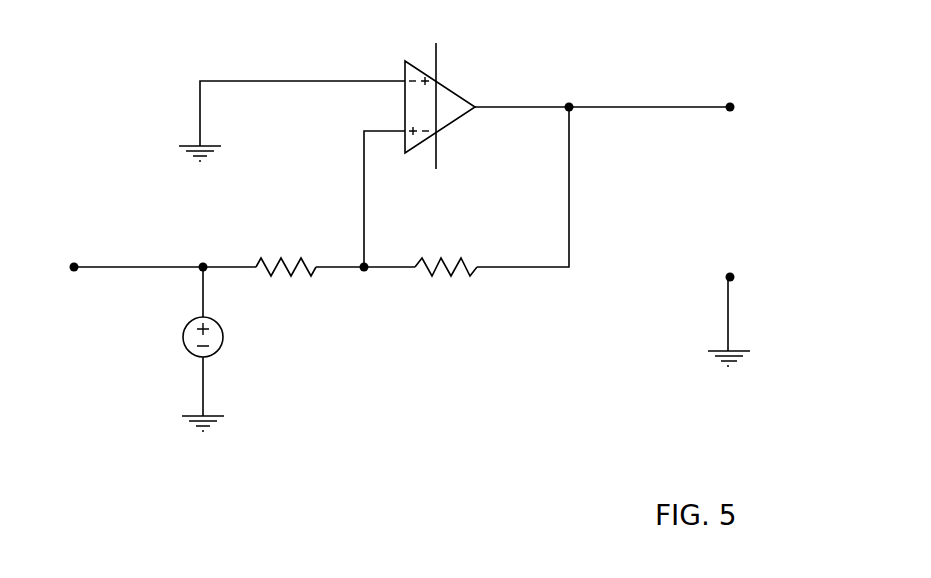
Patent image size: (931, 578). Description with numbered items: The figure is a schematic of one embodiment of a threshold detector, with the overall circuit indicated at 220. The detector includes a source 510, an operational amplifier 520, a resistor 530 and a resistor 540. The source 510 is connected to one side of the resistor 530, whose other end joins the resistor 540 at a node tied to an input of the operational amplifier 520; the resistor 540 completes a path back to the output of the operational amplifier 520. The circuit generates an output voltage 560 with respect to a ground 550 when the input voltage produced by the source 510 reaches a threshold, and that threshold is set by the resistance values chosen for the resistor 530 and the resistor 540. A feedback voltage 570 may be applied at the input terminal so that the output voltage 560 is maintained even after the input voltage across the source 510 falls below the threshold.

The amplifier circuit 220 is at (130, 101).
The source 510 is at (185, 355).
The operational amplifier 520 is at (460, 93).
The resistor 530 is at (300, 283).
The resistor 540 is at (448, 283).
The ground 550 is at (194, 170).
The output voltage 560 is at (752, 265).
The feedback voltage 570 is at (74, 276).